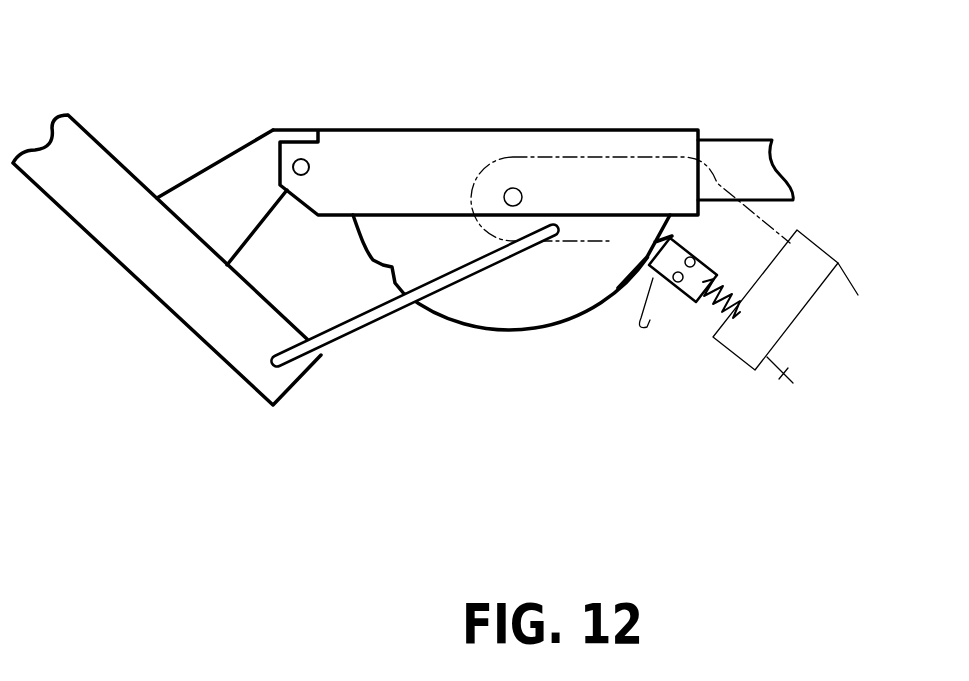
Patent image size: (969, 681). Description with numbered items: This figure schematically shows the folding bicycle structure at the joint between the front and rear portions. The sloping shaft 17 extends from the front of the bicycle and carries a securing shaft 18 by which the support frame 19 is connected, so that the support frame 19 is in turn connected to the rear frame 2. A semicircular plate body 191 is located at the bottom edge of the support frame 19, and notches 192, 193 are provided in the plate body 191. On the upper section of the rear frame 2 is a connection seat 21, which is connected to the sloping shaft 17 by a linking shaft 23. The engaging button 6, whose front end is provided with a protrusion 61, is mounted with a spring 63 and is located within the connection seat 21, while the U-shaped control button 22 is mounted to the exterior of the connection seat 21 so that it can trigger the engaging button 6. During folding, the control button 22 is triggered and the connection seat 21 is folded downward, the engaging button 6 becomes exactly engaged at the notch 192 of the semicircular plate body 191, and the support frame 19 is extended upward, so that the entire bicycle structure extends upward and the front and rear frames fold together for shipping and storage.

The sloping shaft 17 is at (110, 163).
The securing shaft 18 is at (245, 153).
The support frame 19 is at (517, 137).
The connection seat 21 is at (623, 163).
The semicircular plate body 191 is at (511, 325).
The notch 192 is at (385, 264).
The notch 193 is at (638, 252).
The control button 22 is at (642, 322).
The linking shaft 23 is at (370, 322).
The engaging button 6 is at (772, 337).
The protrusion 61 is at (665, 238).
The spring 63 is at (722, 254).
The rear frame 2 is at (778, 377).